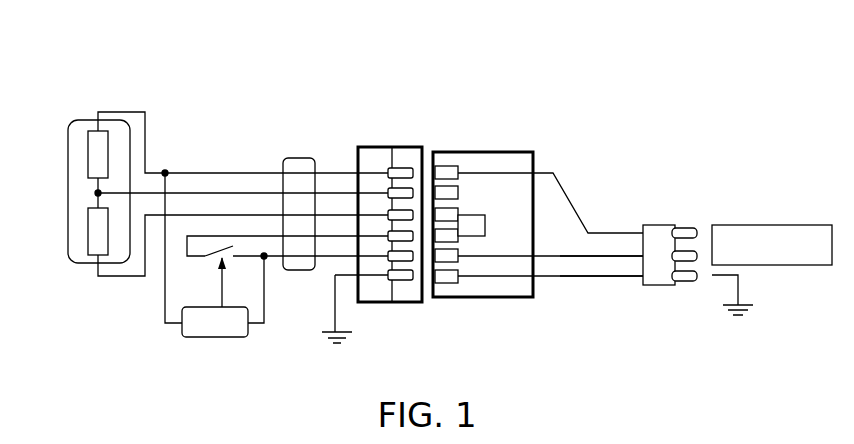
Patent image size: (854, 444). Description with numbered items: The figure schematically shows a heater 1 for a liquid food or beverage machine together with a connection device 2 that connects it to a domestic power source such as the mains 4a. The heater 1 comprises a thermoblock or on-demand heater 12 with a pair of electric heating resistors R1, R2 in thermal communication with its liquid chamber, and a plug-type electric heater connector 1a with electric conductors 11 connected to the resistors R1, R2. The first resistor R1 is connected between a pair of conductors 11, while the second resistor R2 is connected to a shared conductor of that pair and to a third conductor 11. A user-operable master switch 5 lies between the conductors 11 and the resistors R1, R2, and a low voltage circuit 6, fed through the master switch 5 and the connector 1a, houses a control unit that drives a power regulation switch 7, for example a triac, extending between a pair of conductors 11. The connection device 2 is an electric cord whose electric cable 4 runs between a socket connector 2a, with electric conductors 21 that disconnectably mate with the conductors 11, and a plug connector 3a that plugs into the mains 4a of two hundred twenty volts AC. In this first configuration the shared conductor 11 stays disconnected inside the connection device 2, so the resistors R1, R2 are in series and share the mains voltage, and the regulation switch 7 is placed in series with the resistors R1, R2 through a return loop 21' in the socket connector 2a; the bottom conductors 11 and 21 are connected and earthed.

The heater 1 is at (261, 85).
The electric heater connector 1a is at (356, 120).
The electric conductors 11 is at (408, 167).
The thermoblock or on-demand heater 12 is at (88, 120).
The first resistor R1 is at (98, 150).
The second resistor R2 is at (97, 248).
The master switch 5 is at (290, 162).
The low voltage circuit 6 is at (215, 333).
The power regulation switch 7 is at (217, 250).
The connection device 2 is at (607, 88).
The socket connector 2a is at (502, 132).
The electric conductors 21 is at (458, 227).
The return loop 21' is at (514, 280).
The plug connector 3a is at (684, 202).
The electric cable 4 is at (588, 286).
The domestic power supply (mains) 4a is at (769, 212).